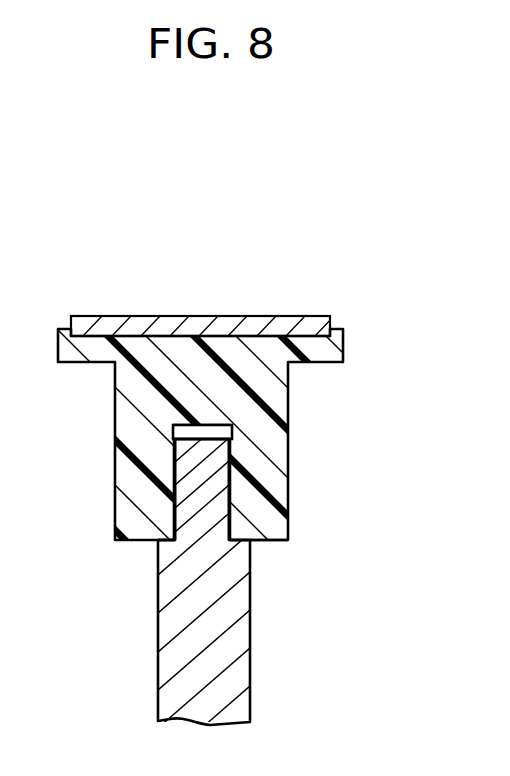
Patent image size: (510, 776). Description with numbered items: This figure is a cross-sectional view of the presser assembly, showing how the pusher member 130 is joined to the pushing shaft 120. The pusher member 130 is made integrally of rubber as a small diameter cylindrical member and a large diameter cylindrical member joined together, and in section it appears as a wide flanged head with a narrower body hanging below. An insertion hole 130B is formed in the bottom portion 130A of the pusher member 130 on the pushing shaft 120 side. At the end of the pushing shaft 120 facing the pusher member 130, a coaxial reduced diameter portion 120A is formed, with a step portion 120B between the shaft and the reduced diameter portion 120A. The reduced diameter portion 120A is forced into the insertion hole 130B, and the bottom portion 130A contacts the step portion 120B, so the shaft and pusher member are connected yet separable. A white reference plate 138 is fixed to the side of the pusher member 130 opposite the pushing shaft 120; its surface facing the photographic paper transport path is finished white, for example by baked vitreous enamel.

The white reference plate 138 is at (264, 316).
The pusher member 130 is at (289, 471).
The bottom portion 130A is at (271, 541).
The insertion hole 130B is at (233, 433).
The pushing shaft 120 is at (251, 634).
The reduced diameter portion 120A is at (174, 460).
The step portion 120B is at (151, 535).